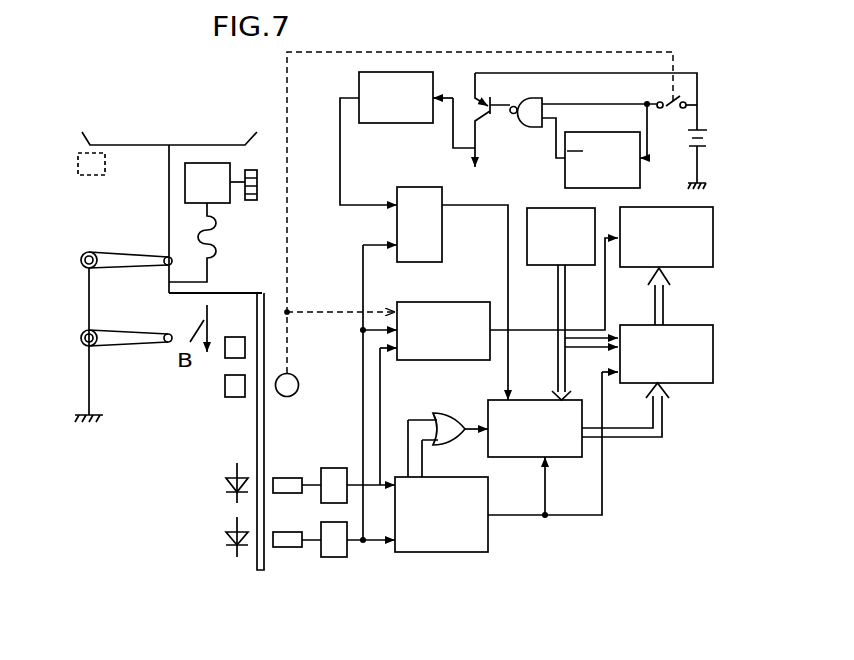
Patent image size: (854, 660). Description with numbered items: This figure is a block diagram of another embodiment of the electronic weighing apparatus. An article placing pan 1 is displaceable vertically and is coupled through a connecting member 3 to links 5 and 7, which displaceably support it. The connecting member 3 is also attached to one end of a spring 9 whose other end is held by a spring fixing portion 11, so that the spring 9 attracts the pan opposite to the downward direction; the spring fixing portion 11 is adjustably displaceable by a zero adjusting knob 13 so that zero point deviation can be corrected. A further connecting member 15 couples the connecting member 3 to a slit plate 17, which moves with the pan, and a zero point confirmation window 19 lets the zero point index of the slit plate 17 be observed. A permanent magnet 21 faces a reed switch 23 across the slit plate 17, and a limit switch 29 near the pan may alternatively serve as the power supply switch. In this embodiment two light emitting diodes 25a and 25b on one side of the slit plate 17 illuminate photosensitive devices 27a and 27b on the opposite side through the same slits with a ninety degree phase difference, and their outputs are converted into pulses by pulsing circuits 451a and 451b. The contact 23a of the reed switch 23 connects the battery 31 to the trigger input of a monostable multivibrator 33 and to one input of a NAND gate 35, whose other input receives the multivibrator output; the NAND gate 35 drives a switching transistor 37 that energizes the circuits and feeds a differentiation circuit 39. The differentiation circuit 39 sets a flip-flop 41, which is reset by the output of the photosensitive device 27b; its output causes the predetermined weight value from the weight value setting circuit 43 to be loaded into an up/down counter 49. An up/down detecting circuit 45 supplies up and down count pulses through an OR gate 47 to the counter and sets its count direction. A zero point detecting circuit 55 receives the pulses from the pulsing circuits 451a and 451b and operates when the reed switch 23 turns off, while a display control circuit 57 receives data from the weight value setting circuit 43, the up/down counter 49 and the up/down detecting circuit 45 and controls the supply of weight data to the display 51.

The article placing pan 1 is at (217, 142).
The connecting member 3 is at (168, 188).
The link 5 is at (120, 252).
The link 7 is at (113, 332).
The spring 9 is at (215, 243).
The spring fixing portion 11 is at (217, 165).
The zero adjusting knob 13 is at (257, 165).
The connecting member 15 is at (213, 292).
The slit plate 17 is at (265, 310).
The zero point confirmation window 19 is at (232, 337).
The permanent magnet 21 is at (225, 392).
The reed switch 23 is at (288, 397).
The contact 23a is at (676, 110).
The light emitting diode 25a is at (228, 535).
The light emitting diode 25b is at (228, 482).
The photosensitive device 27a is at (297, 547).
The photosensitive device 27b is at (292, 493).
The limit switch 29 is at (92, 175).
The battery 31 is at (690, 148).
The monostable multivibrator 33 is at (600, 137).
The NAND gate 35 is at (542, 100).
The switching transistor 37 is at (492, 117).
The differentiation circuit 39 is at (433, 88).
The flip-flop 41 is at (433, 173).
The weight value setting circuit 43 is at (540, 207).
The up/down detecting circuit 45 is at (490, 497).
The OR gate 47 is at (448, 413).
The up/down counter 49 is at (558, 457).
The display 51 is at (700, 267).
The zero point detecting circuit 55 is at (457, 302).
The display control circuit 57 is at (697, 383).
The pulsing circuit 451a is at (337, 557).
The pulsing circuit 451b is at (332, 467).